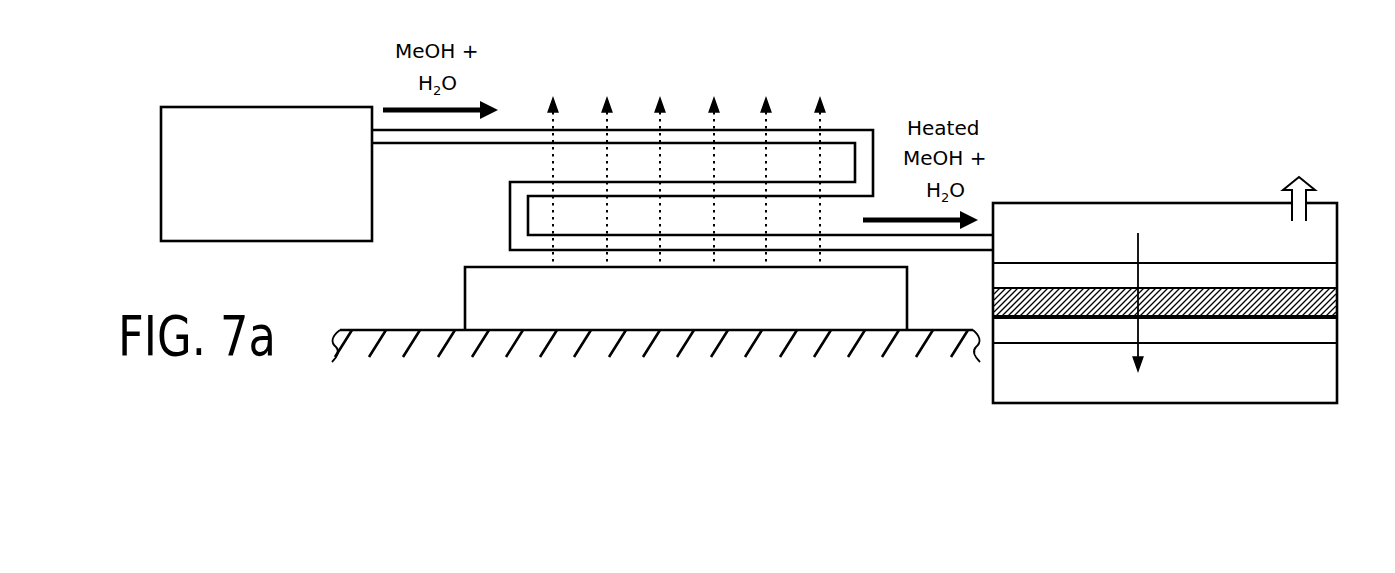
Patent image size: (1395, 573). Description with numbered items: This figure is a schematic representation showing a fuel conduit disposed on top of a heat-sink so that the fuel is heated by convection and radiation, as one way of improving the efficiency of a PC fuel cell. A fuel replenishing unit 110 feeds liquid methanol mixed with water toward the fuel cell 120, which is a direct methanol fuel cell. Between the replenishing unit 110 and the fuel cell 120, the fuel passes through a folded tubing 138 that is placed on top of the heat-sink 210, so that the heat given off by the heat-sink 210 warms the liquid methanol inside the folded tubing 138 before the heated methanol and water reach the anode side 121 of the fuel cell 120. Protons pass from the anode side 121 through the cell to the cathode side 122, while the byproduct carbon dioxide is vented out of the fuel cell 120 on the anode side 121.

The fuel replenishing unit 110 is at (283, 186).
The folded tubing 138 is at (856, 130).
The fuel cell 120 is at (1177, 179).
The anode side 121 is at (1105, 218).
The cathode side 122 is at (1207, 390).
The heat-sink 210 is at (492, 290).